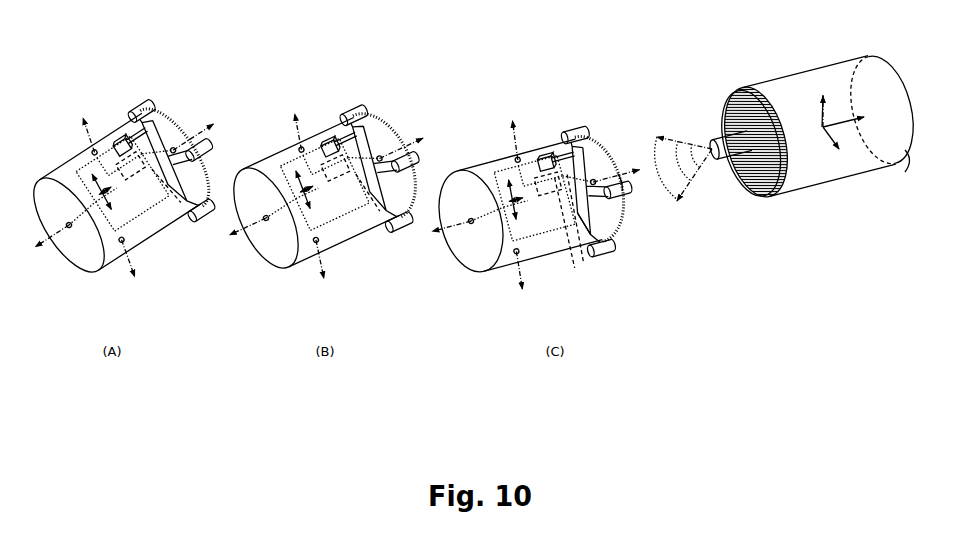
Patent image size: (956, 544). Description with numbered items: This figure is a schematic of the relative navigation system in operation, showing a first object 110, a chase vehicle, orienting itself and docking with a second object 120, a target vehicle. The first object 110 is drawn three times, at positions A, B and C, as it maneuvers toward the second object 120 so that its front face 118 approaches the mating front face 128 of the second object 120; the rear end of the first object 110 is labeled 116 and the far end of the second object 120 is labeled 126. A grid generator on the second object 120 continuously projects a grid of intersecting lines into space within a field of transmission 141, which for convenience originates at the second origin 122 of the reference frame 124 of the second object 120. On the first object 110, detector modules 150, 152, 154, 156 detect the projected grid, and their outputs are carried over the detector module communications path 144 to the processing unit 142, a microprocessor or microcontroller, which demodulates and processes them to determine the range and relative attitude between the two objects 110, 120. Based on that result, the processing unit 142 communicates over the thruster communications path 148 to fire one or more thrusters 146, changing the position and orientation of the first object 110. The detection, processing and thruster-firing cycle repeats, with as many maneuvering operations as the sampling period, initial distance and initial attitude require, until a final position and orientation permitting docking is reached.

The first object 110 is at (114, 108).
The housing end cap 116 is at (78, 260).
The front face 118 is at (180, 108).
The second object 120 is at (767, 83).
The second origin 122 is at (819, 132).
The reference frame 124 is at (810, 105).
The rear end 126 is at (906, 148).
The front face 128 is at (727, 122).
The field of transmission 141 is at (678, 178).
The processing unit 142 is at (547, 168).
The detector module communications path 144 is at (592, 120).
The thrusters 146 is at (504, 158).
The thruster communications path 148 is at (497, 168).
The detector module 150 is at (570, 127).
The detector module 152 is at (583, 262).
The detector module 154 is at (626, 196).
The detector module 156 is at (598, 232).